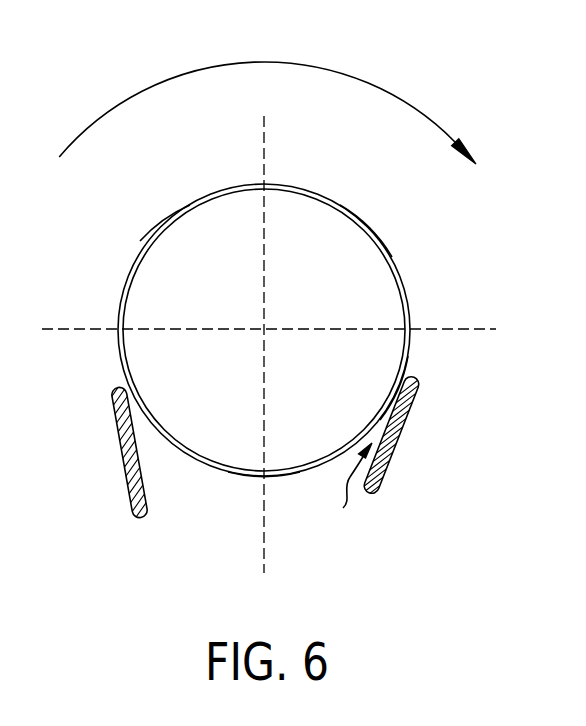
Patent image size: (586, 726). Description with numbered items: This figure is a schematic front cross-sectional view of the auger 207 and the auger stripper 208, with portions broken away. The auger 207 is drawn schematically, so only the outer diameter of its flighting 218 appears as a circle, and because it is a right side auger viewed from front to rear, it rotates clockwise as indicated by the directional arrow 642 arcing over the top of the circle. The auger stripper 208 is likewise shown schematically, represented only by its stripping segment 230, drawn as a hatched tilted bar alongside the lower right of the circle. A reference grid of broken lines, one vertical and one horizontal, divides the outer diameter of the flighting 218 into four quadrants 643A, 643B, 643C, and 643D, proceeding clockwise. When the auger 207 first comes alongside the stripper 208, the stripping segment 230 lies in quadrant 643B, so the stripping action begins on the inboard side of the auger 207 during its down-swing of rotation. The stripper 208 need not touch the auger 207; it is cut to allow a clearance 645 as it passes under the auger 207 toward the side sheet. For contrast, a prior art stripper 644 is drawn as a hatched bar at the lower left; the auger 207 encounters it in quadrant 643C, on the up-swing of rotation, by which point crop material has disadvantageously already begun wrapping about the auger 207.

The auger 207 is at (264, 397).
The flighting 218 is at (300, 473).
The auger stripper 208 is at (451, 439).
The stripping segment 230 is at (397, 440).
The directional arrow 642 is at (333, 71).
The quadrant 643A is at (392, 257).
The quadrant 643B is at (408, 356).
The quadrant 643C is at (228, 472).
The quadrant 643D is at (140, 241).
The prior art stripper 644 is at (132, 480).
The clearance 645 is at (342, 495).